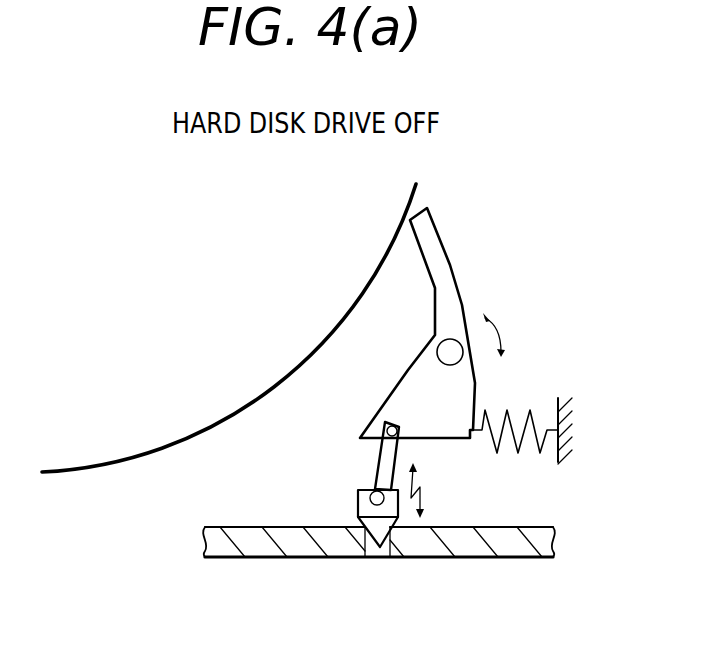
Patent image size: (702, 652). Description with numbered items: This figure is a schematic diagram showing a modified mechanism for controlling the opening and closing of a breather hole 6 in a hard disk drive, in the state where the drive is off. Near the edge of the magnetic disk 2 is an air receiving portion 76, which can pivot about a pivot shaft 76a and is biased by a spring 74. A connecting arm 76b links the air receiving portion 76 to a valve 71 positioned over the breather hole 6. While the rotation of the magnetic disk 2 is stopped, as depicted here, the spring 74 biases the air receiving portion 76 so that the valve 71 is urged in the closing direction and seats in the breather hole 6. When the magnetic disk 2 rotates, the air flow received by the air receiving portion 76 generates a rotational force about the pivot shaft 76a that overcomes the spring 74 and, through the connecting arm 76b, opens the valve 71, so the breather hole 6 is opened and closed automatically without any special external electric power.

The magnetic disk 2 is at (272, 322).
The breather hole 6 is at (377, 557).
The valve 71 is at (372, 525).
The spring 74 is at (538, 422).
The air receiving portion 76 is at (448, 313).
The pivot shaft 76a is at (443, 352).
The connecting arm 76b is at (385, 463).